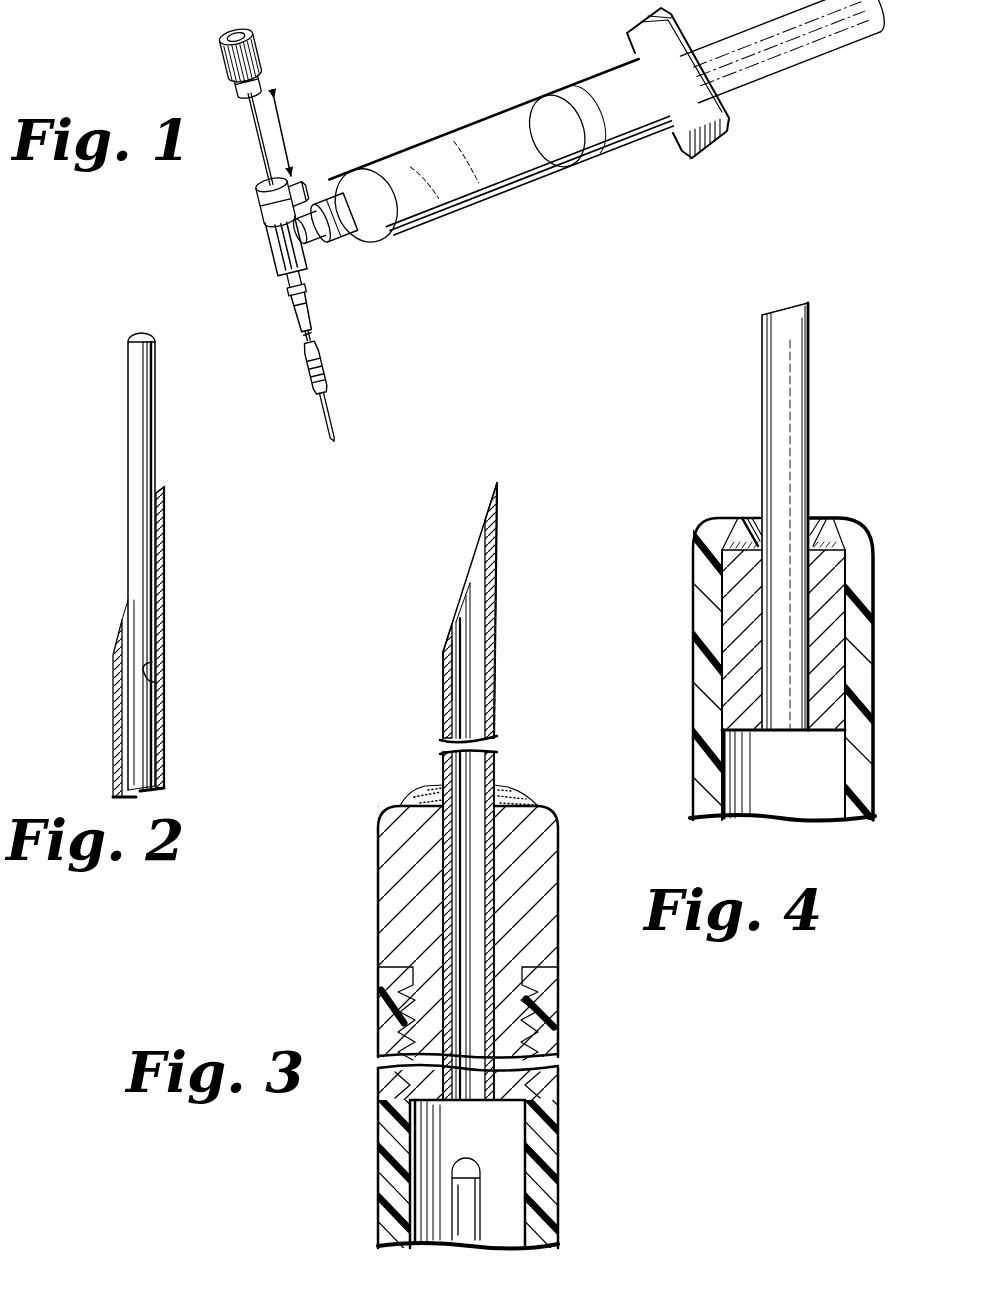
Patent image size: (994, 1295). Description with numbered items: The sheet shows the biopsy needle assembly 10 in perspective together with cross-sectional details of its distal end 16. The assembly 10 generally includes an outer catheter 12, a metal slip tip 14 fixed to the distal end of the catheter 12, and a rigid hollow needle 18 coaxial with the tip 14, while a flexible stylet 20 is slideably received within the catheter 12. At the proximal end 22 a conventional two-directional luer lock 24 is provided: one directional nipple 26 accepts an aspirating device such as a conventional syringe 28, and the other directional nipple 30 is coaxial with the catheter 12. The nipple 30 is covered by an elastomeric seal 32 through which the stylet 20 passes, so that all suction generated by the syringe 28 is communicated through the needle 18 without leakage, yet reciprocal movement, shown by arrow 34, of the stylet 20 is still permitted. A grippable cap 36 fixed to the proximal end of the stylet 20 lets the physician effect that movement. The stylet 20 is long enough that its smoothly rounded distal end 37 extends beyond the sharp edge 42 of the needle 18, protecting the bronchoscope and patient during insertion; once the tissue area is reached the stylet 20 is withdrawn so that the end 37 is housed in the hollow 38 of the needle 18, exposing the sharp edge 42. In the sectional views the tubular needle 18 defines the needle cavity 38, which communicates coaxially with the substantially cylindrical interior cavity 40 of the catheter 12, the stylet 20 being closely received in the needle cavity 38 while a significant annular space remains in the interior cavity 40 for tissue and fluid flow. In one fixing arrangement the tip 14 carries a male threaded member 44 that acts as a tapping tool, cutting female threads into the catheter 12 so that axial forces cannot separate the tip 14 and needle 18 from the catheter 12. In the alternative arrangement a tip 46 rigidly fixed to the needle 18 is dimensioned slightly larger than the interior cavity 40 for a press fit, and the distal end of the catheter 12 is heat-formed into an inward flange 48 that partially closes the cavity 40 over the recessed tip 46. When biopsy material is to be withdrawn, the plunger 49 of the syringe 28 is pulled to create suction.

In FIG. 1, the biopsy needle assembly 10 is at (362, 343).
In FIG. 1, the outer catheter 12 is at (297, 318).
In FIG. 3, the outer catheter 12 is at (540, 1212).
In FIG. 4, the outer catheter 12 is at (700, 683).
In FIG. 1, the metal slip tip 14 is at (324, 384).
In FIG. 3, the metal slip tip 14 is at (542, 884).
In FIG. 1, the distal end 16 is at (300, 385).
In FIG. 3, the distal end 16 is at (356, 953).
In FIG. 1, the rigid hollow needle 18 is at (338, 418).
In FIG. 2, the rigid hollow needle 18 is at (166, 592).
In FIG. 3, the rigid hollow needle 18 is at (496, 648).
In FIG. 4, the rigid hollow needle 18 is at (797, 452).
In FIG. 1, the flexible stylet 20 is at (259, 150).
In FIG. 2, the flexible stylet 20 is at (133, 432).
In FIG. 3, the flexible stylet 20 is at (480, 1180).
In FIG. 1, the proximal end 22 is at (262, 262).
In FIG. 1, the two-directional luer lock 24 is at (270, 246).
In FIG. 1, the directional nipple 26 is at (318, 250).
In FIG. 1, the syringe 28 is at (485, 119).
In FIG. 1, the directional nipple 30 is at (297, 193).
In FIG. 1, the elastomeric seal 32 is at (257, 193).
In FIG. 1, the arrow 34 is at (283, 140).
In FIG. 1, the grippable cap 36 is at (250, 55).
In FIG. 2, the smoothly rounded distal end 37 is at (141, 330).
In FIG. 2, the needle cavity 38 is at (150, 678).
In FIG. 3, the needle cavity 38 is at (456, 684).
In FIG. 3, the interior cavity 40 is at (508, 1116).
In FIG. 4, the interior cavity 40 is at (843, 797).
In FIG. 2, the sharp edge 42 is at (159, 488).
In FIG. 3, the sharp edge 42 is at (478, 550).
In FIG. 3, the male threaded member 44 is at (532, 1030).
In FIG. 3, the tip 46 is at (469, 795).
In FIG. 4, the tip 46 is at (840, 556).
In FIG. 4, the inward flange 48 is at (737, 522).
In FIG. 1, the plunger 49 is at (810, 62).